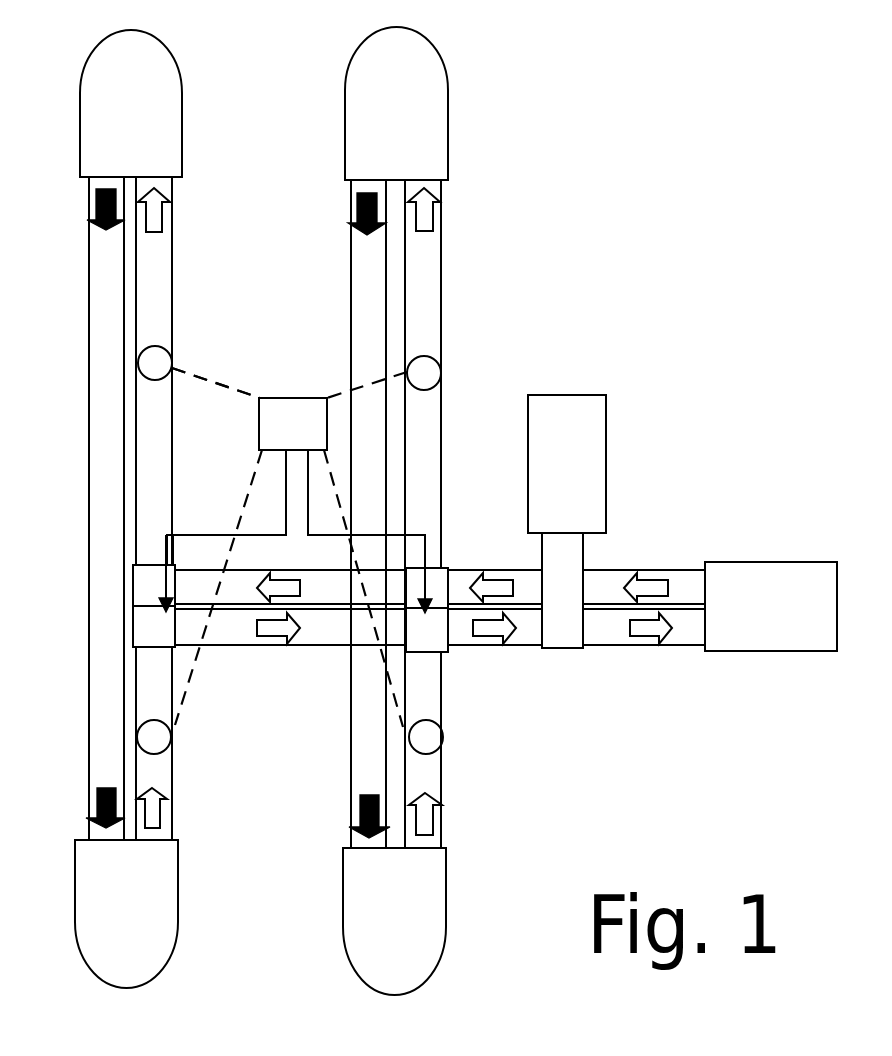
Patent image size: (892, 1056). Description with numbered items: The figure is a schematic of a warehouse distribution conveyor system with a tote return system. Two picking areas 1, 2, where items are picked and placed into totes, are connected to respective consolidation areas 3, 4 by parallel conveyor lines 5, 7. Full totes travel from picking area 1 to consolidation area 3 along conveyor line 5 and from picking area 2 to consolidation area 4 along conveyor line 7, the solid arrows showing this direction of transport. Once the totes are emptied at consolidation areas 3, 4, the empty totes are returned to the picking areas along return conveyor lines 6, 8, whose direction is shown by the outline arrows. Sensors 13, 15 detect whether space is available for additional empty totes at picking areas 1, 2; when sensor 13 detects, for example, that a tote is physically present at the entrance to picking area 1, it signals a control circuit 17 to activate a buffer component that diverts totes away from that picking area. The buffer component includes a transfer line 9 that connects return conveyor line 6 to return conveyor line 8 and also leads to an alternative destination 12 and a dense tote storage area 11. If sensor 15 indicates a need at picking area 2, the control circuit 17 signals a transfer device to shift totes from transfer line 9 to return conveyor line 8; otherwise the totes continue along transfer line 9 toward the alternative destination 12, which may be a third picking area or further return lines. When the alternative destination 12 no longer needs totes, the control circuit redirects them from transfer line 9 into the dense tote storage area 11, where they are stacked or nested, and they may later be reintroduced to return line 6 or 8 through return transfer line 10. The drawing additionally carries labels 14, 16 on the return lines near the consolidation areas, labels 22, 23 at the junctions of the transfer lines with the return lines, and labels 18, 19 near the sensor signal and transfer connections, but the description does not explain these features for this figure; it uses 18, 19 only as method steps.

The picking area 1 is at (131, 103).
The picking area 2 is at (396, 103).
The consolidation area 3 is at (126, 914).
The consolidation area 4 is at (394, 921).
The conveyor line 5 is at (66, 229).
The return conveyor line 6 is at (184, 252).
The conveyor line 7 is at (333, 222).
The return conveyor line 8 is at (463, 264).
The transfer line 9 is at (654, 662).
The return transfer line 10 is at (684, 560).
The dense tote storage area 11 is at (567, 521).
The alternative destination 12 is at (771, 606).
The sensor 13 is at (157, 368).
The second sensor 14 is at (156, 738).
The sensor 15 is at (424, 373).
The fourth sensor 16 is at (428, 738).
The control circuit 17 is at (289, 547).
The tote emptying and return step 18 is at (220, 386).
The dense storage step 19 is at (178, 535).
The first valve 22 is at (154, 591).
The second valve 23 is at (427, 593).